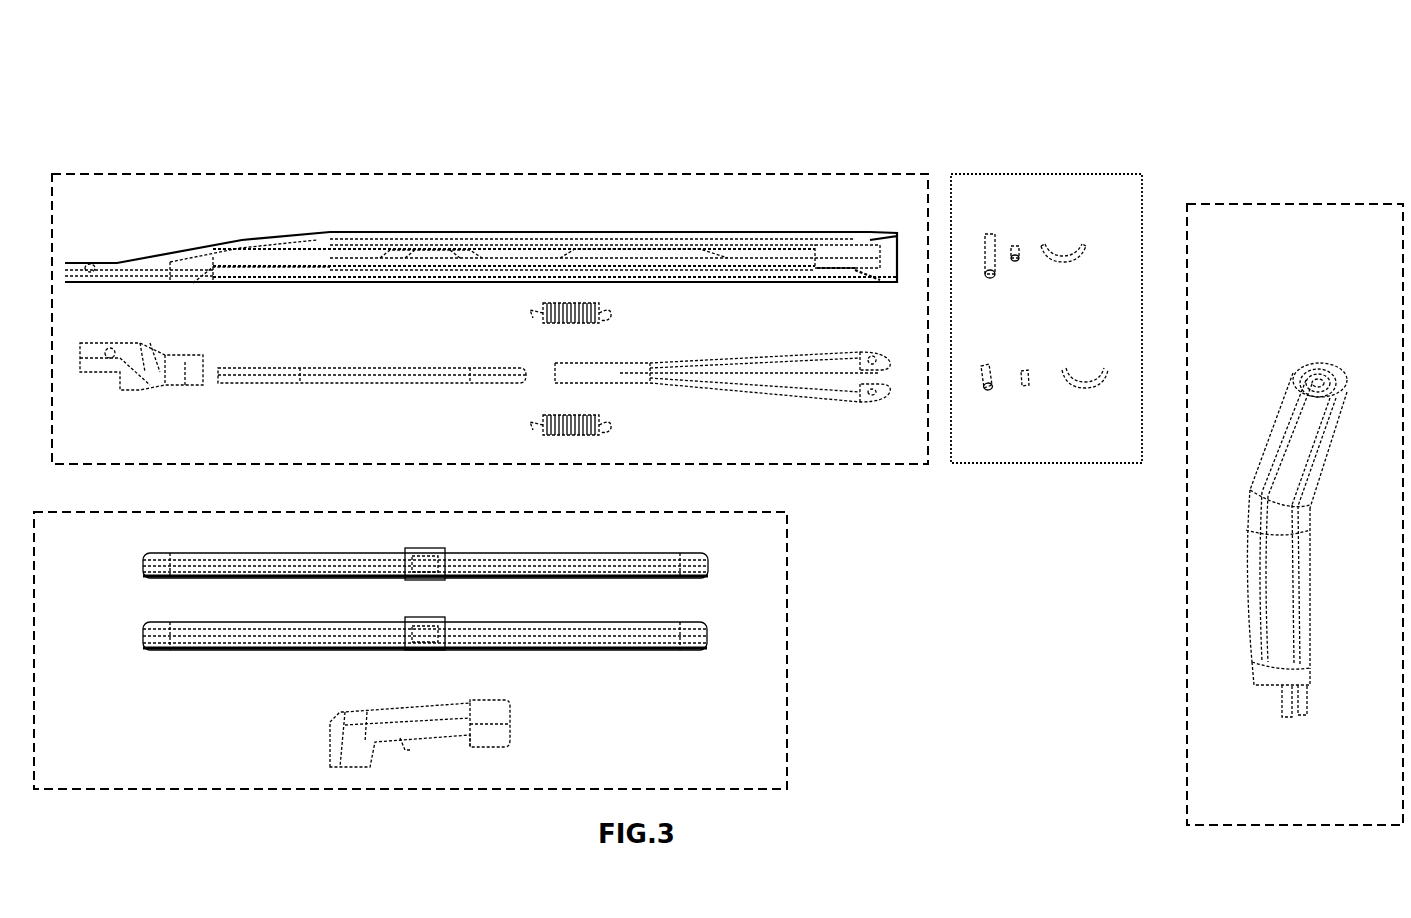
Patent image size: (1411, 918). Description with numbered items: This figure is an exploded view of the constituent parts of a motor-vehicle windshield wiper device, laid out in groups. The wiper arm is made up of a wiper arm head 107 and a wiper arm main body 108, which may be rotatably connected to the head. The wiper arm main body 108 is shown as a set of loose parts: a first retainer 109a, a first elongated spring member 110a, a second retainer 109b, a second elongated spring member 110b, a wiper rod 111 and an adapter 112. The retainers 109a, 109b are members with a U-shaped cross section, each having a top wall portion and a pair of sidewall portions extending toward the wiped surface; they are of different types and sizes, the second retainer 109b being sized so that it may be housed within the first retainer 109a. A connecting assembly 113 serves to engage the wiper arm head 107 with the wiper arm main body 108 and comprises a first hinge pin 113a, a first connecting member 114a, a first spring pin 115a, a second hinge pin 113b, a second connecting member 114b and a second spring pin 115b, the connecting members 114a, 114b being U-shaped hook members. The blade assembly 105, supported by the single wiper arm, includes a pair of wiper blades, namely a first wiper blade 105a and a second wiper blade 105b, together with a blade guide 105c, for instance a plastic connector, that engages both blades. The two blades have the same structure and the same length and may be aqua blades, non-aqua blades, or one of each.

The blade assembly 105 is at (787, 709).
The first wiper blade 105a is at (708, 553).
The second wiper blade 105b is at (707, 638).
The blade guide 105c is at (430, 735).
The wiper arm head 107 is at (1287, 247).
The wiper arm main body 108 is at (718, 190).
The first retainer 109a is at (435, 228).
The second retainer 109b is at (818, 392).
The first elongated spring member 110a is at (590, 302).
The second elongated spring member 110b is at (613, 425).
The wiper rod 111 is at (448, 366).
The adapter 112 is at (185, 386).
The connecting assembly 113 is at (1130, 177).
The first hinge pin 113a is at (990, 234).
The second hinge pin 113b is at (984, 395).
The first connecting member 114a is at (1075, 248).
The second connecting member 114b is at (1095, 388).
The first spring pin 115a is at (1014, 246).
The second spring pin 115b is at (1026, 390).